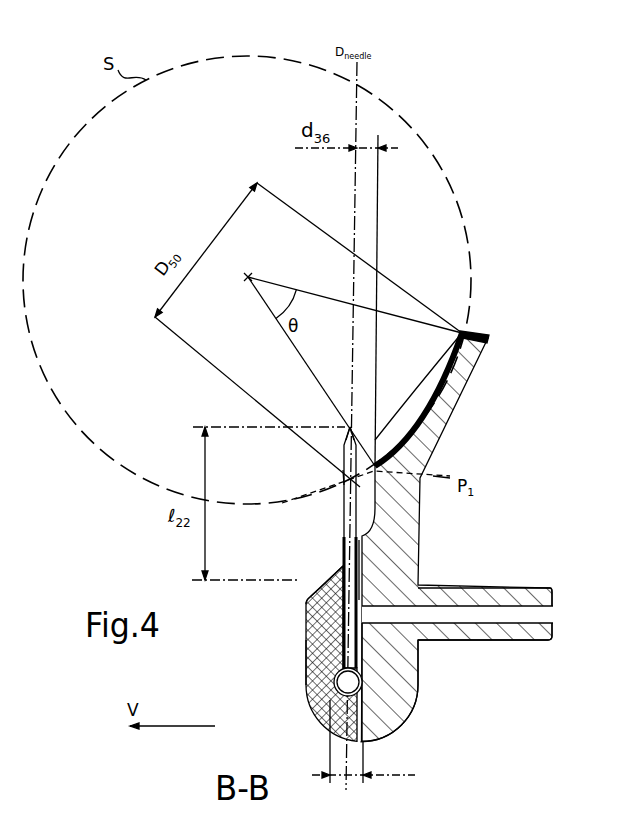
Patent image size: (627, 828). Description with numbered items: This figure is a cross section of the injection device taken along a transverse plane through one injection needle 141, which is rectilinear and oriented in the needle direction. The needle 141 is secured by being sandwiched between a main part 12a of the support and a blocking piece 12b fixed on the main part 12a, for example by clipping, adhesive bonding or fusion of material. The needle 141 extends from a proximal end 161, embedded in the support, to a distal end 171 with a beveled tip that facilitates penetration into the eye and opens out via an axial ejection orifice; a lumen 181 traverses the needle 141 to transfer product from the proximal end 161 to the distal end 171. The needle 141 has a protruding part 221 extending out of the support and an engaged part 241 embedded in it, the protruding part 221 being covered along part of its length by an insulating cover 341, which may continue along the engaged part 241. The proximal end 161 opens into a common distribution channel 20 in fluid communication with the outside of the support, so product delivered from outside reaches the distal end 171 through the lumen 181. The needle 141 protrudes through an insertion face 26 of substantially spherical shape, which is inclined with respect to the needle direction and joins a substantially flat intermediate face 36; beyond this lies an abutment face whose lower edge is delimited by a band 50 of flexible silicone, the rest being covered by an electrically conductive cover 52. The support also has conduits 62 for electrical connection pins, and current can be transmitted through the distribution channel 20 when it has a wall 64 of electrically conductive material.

The protruding part 221 is at (420, 510).
The electrically conductive cover 52 is at (447, 360).
The band 50 is at (489, 337).
The engaged part 241 is at (388, 573).
The conduits 62 is at (552, 619).
The main part 12a is at (405, 722).
The distribution channel 20 is at (362, 683).
The blocking piece 12b is at (305, 681).
The proximal end 161 is at (305, 656).
The insertion face 26 is at (305, 603).
The insulating cover 341 is at (340, 567).
The wall 64 is at (334, 727).
The injection needle 141 is at (342, 537).
The distal end 171 is at (348, 425).
The lumen 181 is at (343, 477).
The intermediate face 36 is at (366, 508).